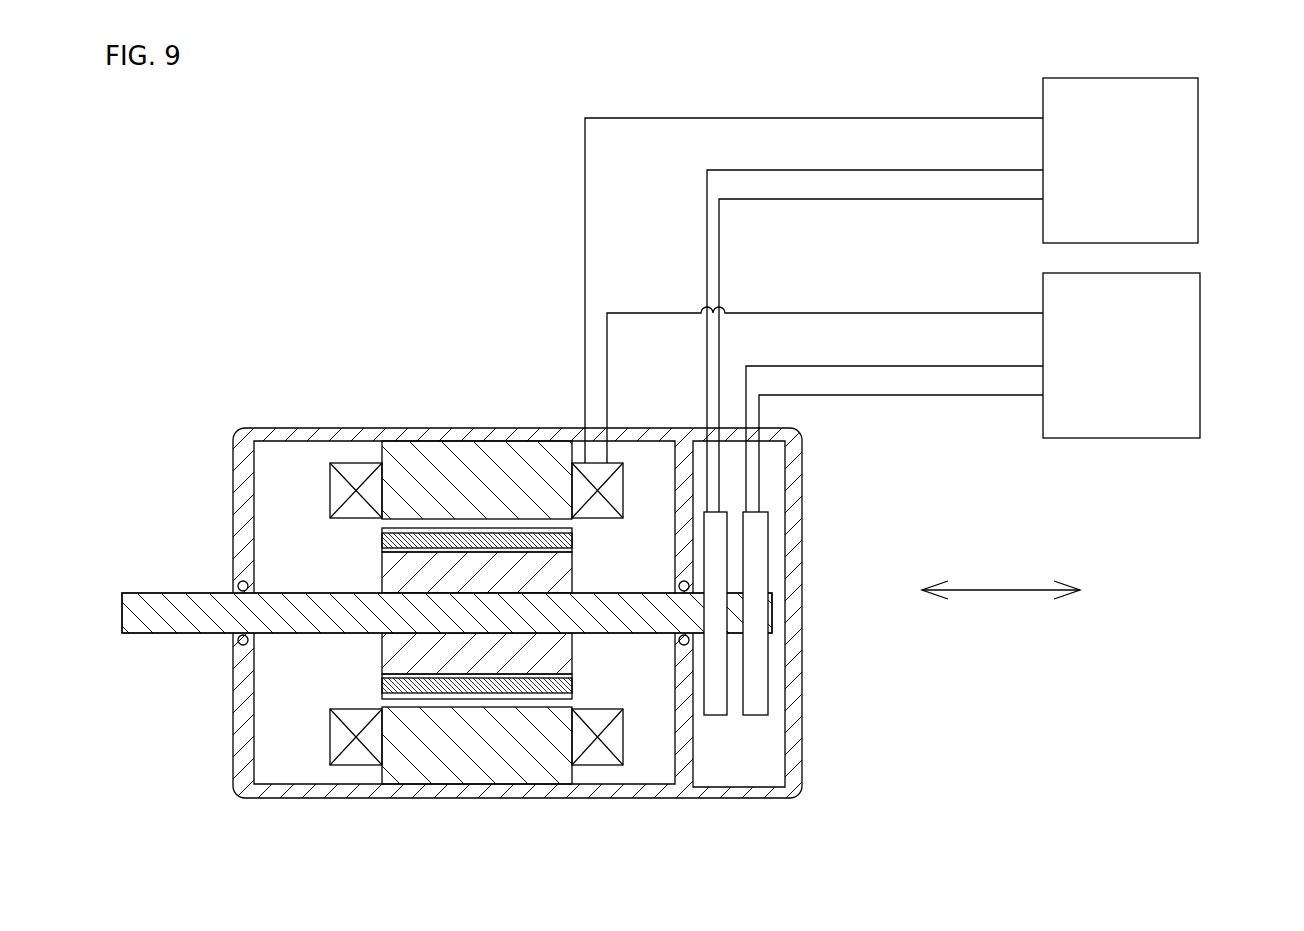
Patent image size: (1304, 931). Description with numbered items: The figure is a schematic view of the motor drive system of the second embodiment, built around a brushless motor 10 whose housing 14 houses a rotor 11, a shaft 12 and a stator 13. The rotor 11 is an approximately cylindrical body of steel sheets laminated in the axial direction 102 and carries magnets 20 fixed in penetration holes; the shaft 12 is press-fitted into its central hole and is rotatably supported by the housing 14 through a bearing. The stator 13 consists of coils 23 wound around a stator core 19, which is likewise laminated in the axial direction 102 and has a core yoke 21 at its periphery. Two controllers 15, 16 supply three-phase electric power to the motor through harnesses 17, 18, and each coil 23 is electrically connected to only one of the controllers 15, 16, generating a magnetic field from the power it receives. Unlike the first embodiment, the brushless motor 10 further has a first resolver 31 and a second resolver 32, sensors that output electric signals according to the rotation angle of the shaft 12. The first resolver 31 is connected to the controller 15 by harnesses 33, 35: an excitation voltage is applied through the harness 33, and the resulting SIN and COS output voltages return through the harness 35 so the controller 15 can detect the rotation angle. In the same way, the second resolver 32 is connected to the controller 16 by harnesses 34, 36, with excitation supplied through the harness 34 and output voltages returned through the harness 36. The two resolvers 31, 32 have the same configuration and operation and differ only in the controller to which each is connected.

The brushless motor 10 is at (347, 356).
The rotor 11 is at (378, 652).
The shaft 12 is at (140, 593).
The stator 13 is at (326, 745).
The housing 14 is at (802, 677).
The controller 15 is at (1198, 118).
The controller 16 is at (1200, 310).
The harness 17 is at (585, 205).
The harness 18 is at (656, 313).
The stator core 19 is at (478, 775).
The magnet 20 is at (572, 688).
The core yoke 21 is at (382, 562).
The coil 23 is at (360, 766).
The first resolver 31 is at (712, 716).
The second resolver 32 is at (755, 716).
The harness 33 is at (876, 170).
The harness 34 is at (876, 366).
The harness 35 is at (878, 199).
The harness 36 is at (878, 395).
The axial direction 102 is at (997, 590).